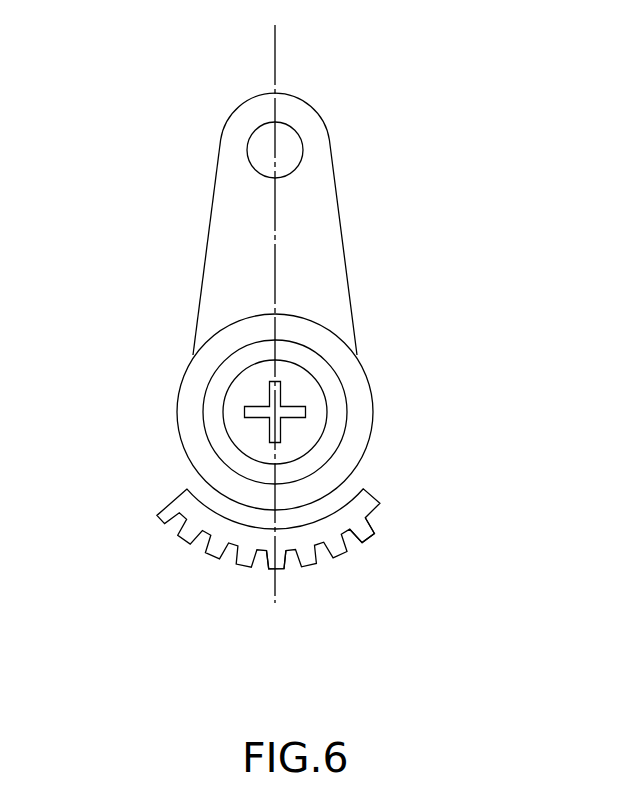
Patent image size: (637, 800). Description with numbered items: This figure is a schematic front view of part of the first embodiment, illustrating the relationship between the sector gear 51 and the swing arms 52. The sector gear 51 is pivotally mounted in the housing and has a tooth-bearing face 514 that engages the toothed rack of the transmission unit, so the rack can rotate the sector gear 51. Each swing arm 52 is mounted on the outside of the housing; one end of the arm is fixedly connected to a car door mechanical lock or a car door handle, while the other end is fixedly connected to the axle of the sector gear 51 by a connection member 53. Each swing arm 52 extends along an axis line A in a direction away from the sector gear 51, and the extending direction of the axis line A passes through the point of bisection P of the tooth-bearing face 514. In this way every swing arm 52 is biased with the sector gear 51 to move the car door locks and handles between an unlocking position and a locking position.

The axis line A is at (277, 60).
The swing arm 52 is at (228, 253).
The connection member 53 is at (312, 400).
The sector gear 51 is at (355, 487).
The tooth-bearing face 514 is at (370, 537).
The point of bisection P is at (268, 567).